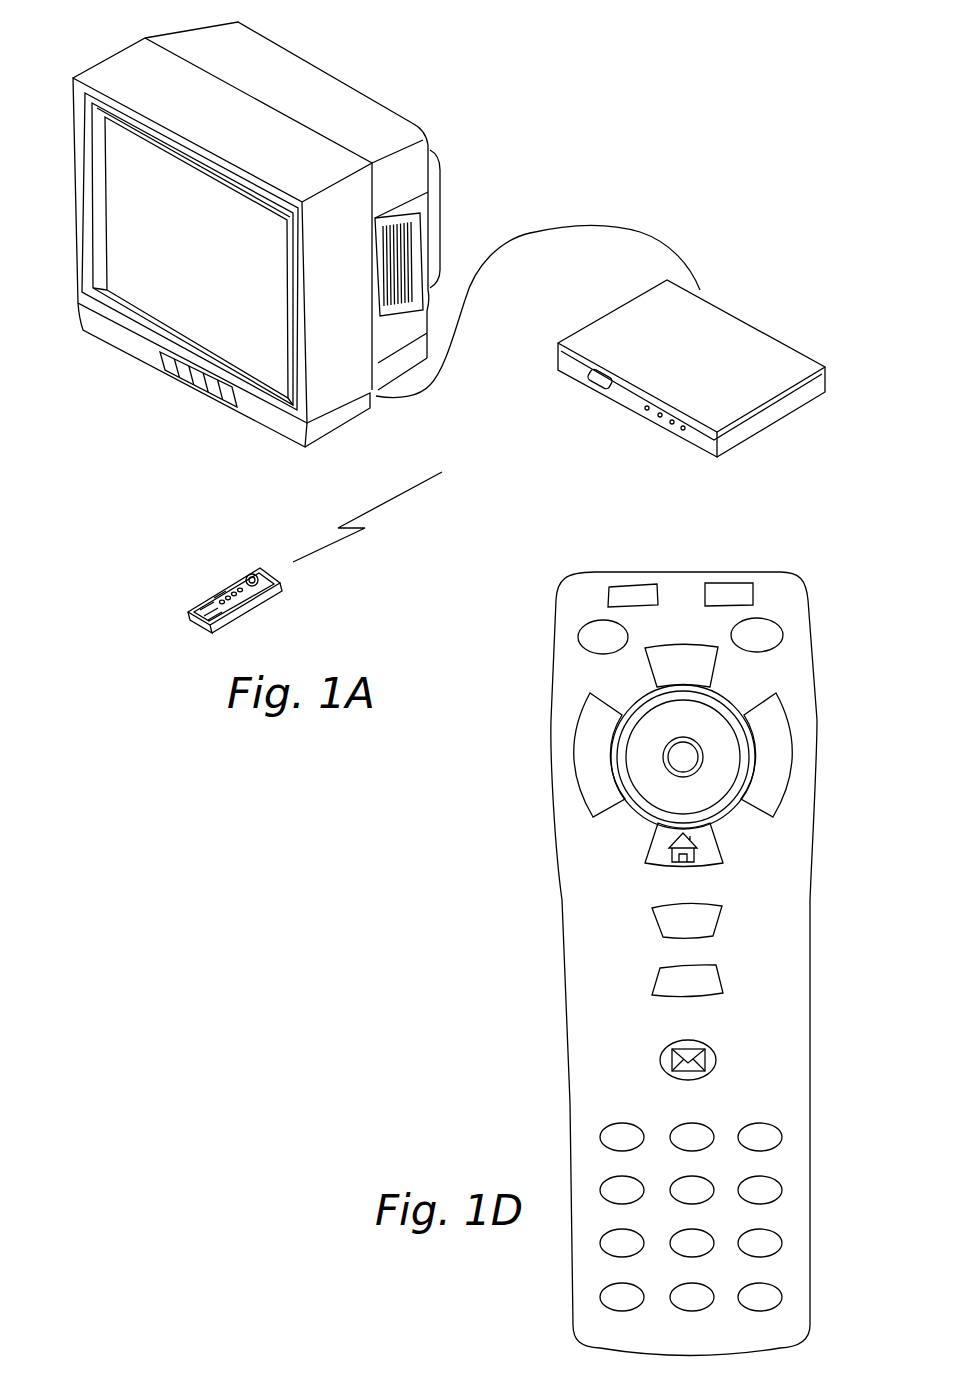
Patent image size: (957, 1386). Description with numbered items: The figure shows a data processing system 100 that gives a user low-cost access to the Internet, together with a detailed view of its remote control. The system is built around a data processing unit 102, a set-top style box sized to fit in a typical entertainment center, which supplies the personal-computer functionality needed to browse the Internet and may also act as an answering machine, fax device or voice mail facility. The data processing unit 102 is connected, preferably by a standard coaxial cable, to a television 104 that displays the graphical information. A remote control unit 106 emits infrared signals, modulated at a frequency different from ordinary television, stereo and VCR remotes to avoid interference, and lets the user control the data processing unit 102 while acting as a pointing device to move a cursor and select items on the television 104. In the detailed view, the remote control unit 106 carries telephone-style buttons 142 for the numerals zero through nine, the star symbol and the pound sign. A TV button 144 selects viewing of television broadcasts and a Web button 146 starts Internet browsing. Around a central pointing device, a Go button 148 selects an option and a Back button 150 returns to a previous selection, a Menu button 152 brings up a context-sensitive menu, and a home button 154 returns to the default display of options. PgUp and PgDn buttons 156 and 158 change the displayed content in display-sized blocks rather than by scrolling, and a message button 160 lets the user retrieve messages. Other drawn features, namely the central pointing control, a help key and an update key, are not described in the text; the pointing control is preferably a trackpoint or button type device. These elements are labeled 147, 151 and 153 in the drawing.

In FIG. 1A, the data processing system 100 is at (560, 482).
In FIG. 1A, the data processing unit 102 is at (760, 327).
In FIG. 1A, the television 104 is at (392, 112).
In FIG. 1A, the remote control unit 106 is at (215, 600).
In FIG. 1D, the remote control unit 106 is at (810, 1087).
In FIG. 1D, the buttons 142 is at (820, 1110).
In FIG. 1D, the TV button 144 is at (630, 584).
In FIG. 1D, the Web button 146 is at (727, 583).
In FIG. 1D, the center select button of navigation ring 147 is at (690, 755).
In FIG. 1D, the Go button 148 is at (770, 820).
In FIG. 1D, the Back button 150 is at (605, 813).
In FIG. 1D, the Help button 151 is at (580, 637).
In FIG. 1D, the Menu button 152 is at (690, 647).
In FIG. 1D, the Update button 153 is at (782, 638).
In FIG. 1D, the home button 154 is at (718, 868).
In FIG. 1D, the PgUp button 156 is at (718, 920).
In FIG. 1D, the PgDn button 158 is at (703, 998).
In FIG. 1D, the message button 160 is at (717, 1060).